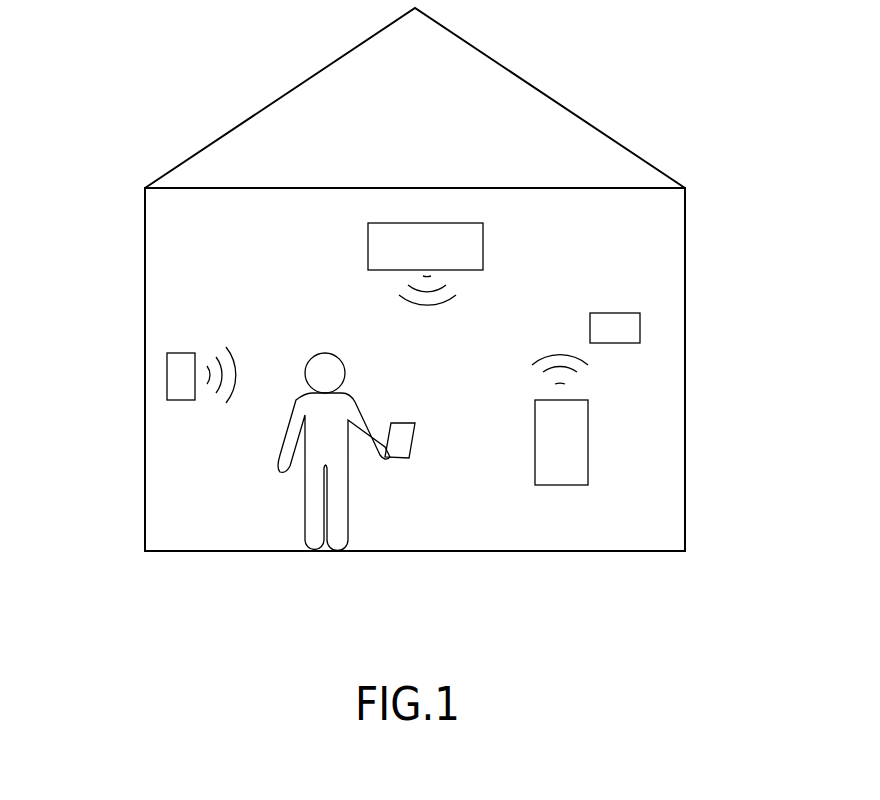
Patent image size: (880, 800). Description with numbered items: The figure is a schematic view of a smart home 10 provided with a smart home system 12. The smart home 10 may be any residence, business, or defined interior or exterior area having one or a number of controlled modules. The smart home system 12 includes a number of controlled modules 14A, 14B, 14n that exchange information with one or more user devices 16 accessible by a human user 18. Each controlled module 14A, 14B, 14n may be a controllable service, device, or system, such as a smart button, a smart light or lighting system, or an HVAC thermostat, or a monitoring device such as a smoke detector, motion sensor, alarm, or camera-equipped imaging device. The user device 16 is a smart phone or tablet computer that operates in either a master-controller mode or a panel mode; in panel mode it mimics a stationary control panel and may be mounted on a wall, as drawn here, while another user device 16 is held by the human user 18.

The smart home 10 is at (557, 120).
The smart home system 12 is at (614, 288).
The controlled module 14A is at (182, 375).
The controlled module 14B is at (483, 242).
The controlled module 14n is at (588, 447).
The user device 16 is at (640, 324).
The human user 18 is at (346, 366).